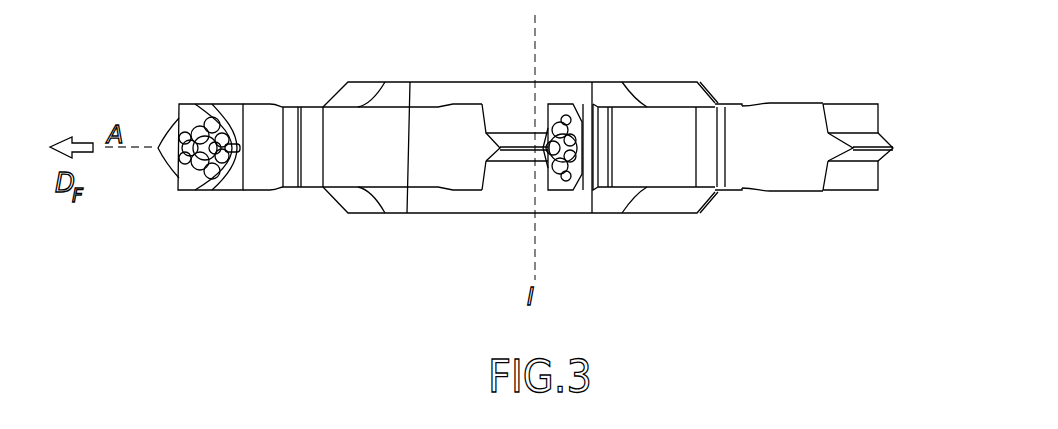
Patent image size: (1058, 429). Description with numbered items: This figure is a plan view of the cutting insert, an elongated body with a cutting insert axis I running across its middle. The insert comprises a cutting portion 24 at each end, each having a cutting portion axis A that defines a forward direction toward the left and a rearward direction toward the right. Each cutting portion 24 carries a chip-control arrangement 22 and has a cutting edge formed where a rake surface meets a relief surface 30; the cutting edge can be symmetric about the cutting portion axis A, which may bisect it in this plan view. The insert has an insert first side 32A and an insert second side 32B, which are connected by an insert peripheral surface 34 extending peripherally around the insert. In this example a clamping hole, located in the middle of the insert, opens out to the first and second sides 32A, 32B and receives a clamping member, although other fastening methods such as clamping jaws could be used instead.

The chip-control arrangement 22 is at (212, 88).
The cutting portion 24 is at (223, 205).
The relief surface 30 is at (510, 120).
The insert first side 32A is at (748, 192).
The insert second side 32B is at (748, 103).
The insert peripheral surface 34 is at (357, 150).